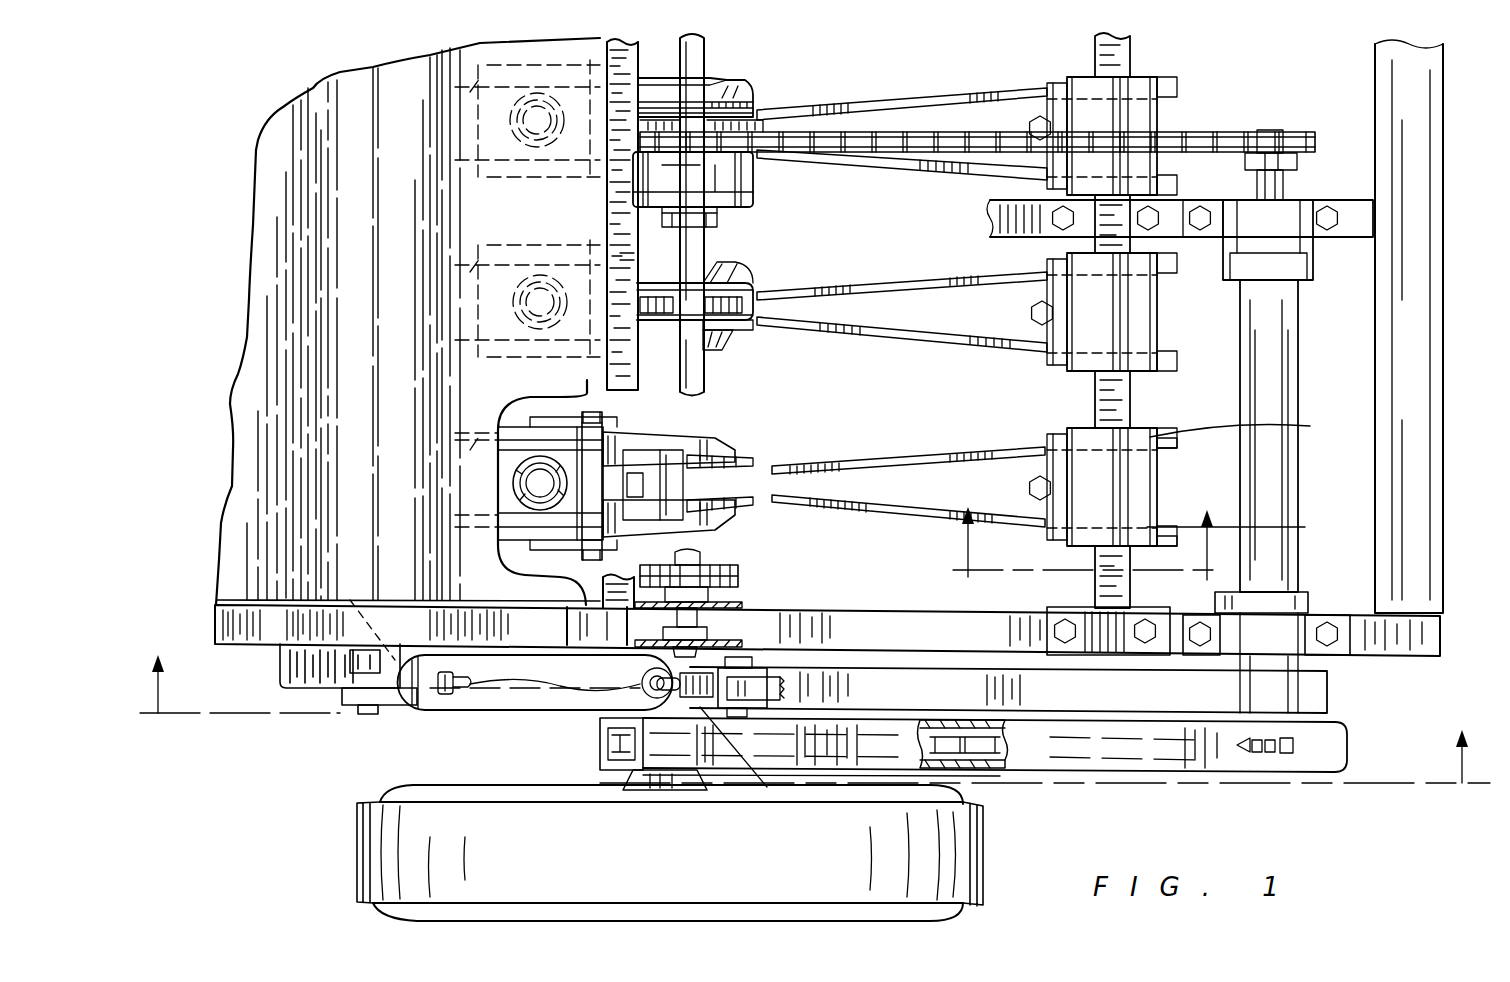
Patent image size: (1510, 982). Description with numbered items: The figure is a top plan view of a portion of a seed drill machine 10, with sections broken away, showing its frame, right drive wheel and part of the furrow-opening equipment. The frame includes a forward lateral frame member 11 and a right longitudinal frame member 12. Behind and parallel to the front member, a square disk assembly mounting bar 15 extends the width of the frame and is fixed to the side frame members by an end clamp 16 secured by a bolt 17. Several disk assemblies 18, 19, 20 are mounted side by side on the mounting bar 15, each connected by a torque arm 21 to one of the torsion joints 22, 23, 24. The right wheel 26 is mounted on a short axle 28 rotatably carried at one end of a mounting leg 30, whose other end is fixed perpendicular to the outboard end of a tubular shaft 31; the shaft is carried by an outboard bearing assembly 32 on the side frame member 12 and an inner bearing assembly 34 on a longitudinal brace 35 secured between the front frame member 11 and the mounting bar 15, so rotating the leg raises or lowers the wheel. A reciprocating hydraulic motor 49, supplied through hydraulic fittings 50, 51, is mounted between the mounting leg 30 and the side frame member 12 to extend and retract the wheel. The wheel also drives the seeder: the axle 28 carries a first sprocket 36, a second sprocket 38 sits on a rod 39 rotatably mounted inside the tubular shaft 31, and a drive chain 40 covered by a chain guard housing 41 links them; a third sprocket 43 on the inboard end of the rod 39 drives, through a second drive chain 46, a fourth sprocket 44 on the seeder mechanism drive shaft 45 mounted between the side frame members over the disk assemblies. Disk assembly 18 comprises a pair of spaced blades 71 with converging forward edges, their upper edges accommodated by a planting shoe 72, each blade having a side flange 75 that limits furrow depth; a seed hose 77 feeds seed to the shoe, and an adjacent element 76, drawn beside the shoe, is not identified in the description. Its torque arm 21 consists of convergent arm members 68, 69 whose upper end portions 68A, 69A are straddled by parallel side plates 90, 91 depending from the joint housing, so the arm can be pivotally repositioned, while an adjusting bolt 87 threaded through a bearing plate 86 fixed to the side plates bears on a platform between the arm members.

The seed drill machine 10 is at (295, 720).
The forward lateral frame member 11 is at (1413, 335).
The right longitudinal frame member 12 is at (870, 607).
The disk assembly mounting bar 15 is at (1095, 388).
The end clamp 16 is at (1050, 613).
The bolt 17 is at (1067, 643).
The disk assembly 18 is at (740, 428).
The disk assembly 19 is at (755, 262).
The disk assembly 20 is at (770, 98).
The torque arm 21 is at (972, 91).
The torsion joint 22 is at (1142, 416).
The torsion joint 23 is at (1160, 320).
The torsion joint 24 is at (1157, 120).
The right wheel 26 is at (973, 887).
The axle 28 is at (625, 778).
The mounting leg 30 is at (1183, 714).
The tubular shaft 31 is at (1277, 390).
The outboard bearing assembly 32 is at (1337, 577).
The inner bearing assembly 34 is at (1273, 267).
The longitudinal brace 35 is at (1330, 222).
The first sprocket 36 is at (605, 740).
The second sprocket 38 is at (1297, 750).
The rod 39 is at (1283, 187).
The drive chain 40 is at (967, 767).
The chain guard housing 41 is at (1343, 743).
The third sprocket 43 is at (1293, 138).
The fourth sprocket 44 is at (707, 142).
The seeder mechanism drive shaft 45 is at (697, 247).
The second drive chain 46 is at (848, 140).
The hydraulic motor 49 is at (520, 665).
The hydraulic fitting 50 is at (463, 692).
The hydraulic fitting 51 is at (635, 683).
The arm member 68 is at (850, 467).
The upper end portion of arm member 68A is at (1255, 424).
The arm member 69 is at (900, 502).
The upper end portion of arm member 69A is at (1255, 528).
The blade 71 is at (742, 510).
The planting shoe 72 is at (667, 445).
The side flange 75 is at (732, 450).
The bearing 76 is at (517, 483).
The seed hose 77 is at (537, 468).
The bearing plate 86 is at (1030, 325).
The adjusting bolt 87 is at (1032, 310).
The side plate 90 is at (1165, 442).
The side plate 91 is at (1165, 545).